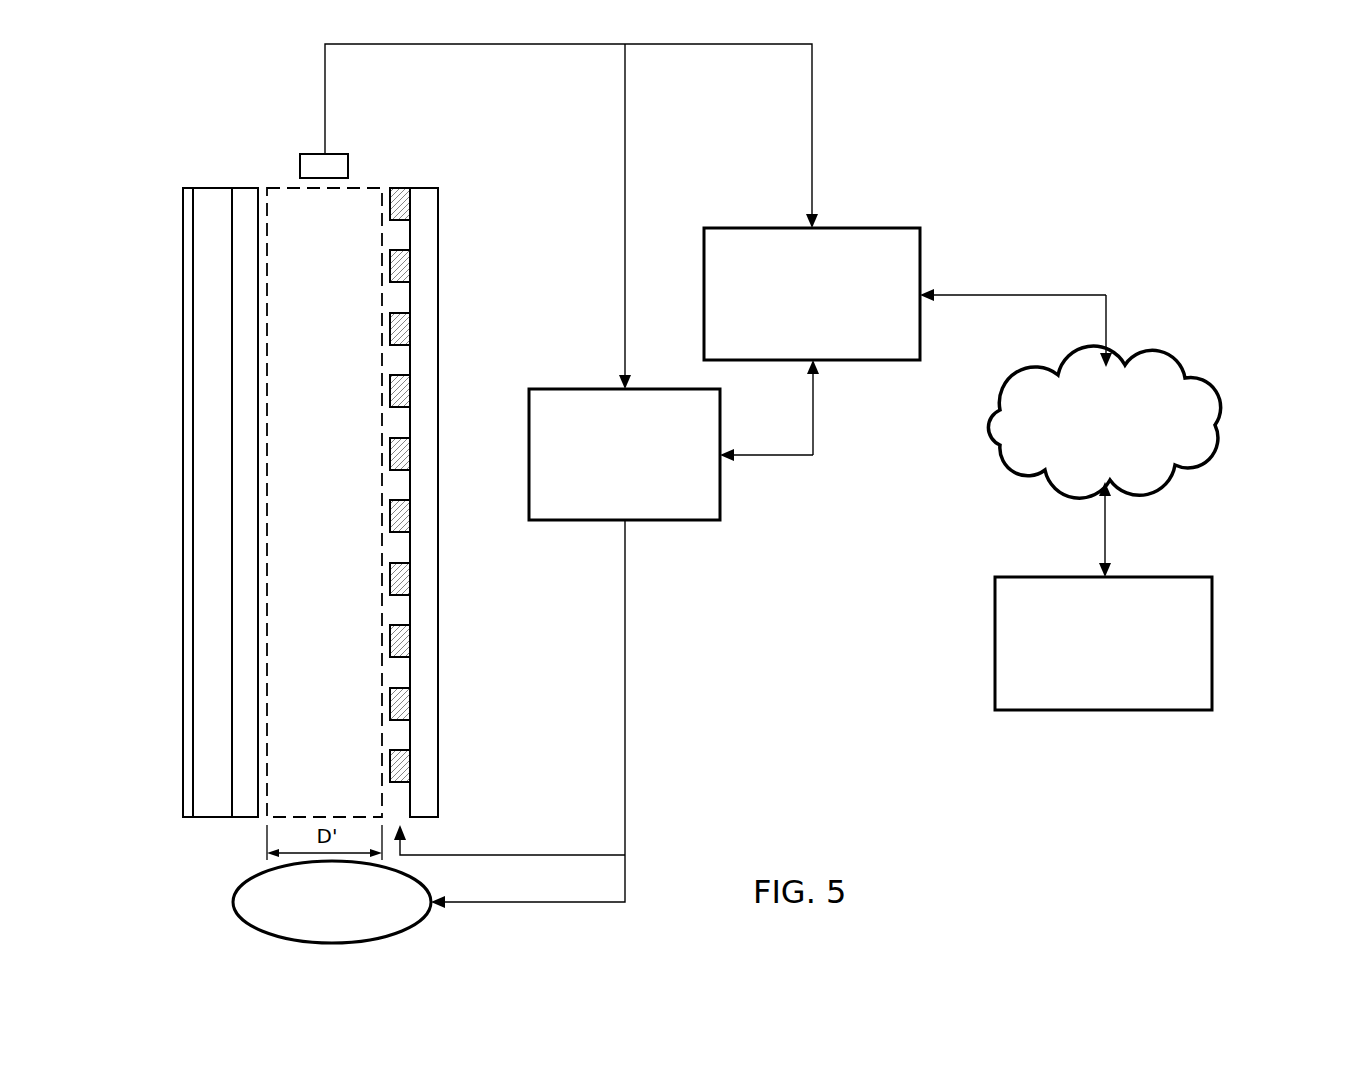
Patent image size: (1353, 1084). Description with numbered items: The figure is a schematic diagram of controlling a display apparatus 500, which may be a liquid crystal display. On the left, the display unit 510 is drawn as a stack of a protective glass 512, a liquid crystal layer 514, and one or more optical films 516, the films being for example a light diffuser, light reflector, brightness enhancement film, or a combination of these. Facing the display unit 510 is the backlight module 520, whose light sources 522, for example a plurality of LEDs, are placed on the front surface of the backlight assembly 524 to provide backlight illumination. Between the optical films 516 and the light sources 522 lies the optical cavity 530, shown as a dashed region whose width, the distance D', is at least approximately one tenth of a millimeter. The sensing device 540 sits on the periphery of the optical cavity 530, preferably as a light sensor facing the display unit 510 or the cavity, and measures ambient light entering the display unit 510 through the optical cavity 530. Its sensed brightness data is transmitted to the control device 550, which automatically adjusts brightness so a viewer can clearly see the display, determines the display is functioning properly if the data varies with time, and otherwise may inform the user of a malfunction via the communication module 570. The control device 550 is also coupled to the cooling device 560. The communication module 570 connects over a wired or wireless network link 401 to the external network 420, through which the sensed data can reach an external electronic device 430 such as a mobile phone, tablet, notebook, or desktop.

The display apparatus 500 is at (903, 94).
The display unit 510 is at (178, 449).
The protective glass 512 is at (189, 192).
The liquid crystal layer 514 is at (207, 192).
The optical films 516 is at (230, 471).
The backlight module 520 is at (446, 444).
The light sources 522 is at (397, 192).
The backlight assembly 524 is at (427, 192).
The optical cavity 530 is at (292, 182).
The sensing device 540 is at (337, 155).
The control device 550 is at (673, 521).
The cooling device 560 is at (417, 925).
The communication module 570 is at (878, 361).
The network link 401 is at (1033, 295).
The network 420 is at (1175, 364).
The electronic device 430 is at (1213, 650).